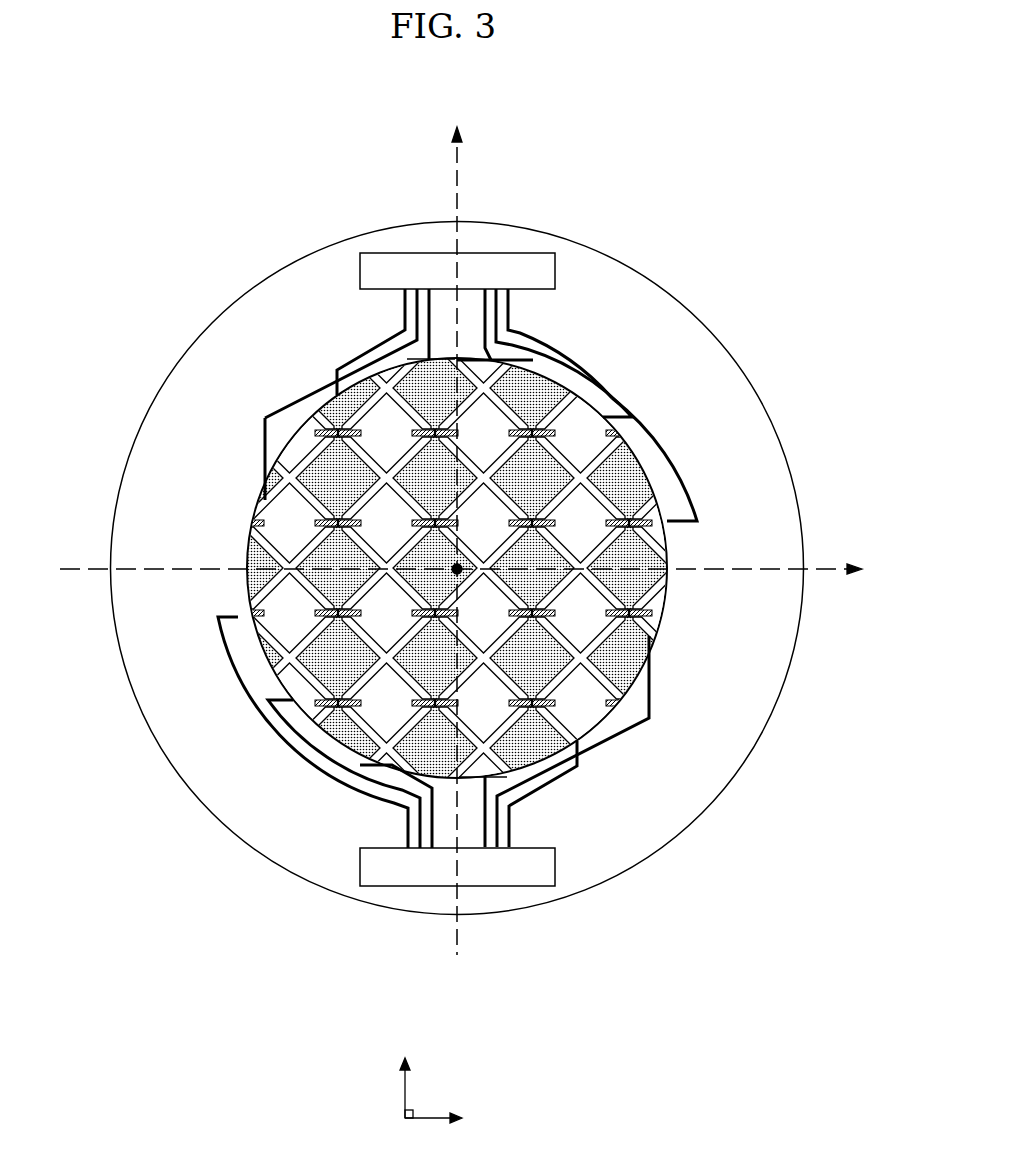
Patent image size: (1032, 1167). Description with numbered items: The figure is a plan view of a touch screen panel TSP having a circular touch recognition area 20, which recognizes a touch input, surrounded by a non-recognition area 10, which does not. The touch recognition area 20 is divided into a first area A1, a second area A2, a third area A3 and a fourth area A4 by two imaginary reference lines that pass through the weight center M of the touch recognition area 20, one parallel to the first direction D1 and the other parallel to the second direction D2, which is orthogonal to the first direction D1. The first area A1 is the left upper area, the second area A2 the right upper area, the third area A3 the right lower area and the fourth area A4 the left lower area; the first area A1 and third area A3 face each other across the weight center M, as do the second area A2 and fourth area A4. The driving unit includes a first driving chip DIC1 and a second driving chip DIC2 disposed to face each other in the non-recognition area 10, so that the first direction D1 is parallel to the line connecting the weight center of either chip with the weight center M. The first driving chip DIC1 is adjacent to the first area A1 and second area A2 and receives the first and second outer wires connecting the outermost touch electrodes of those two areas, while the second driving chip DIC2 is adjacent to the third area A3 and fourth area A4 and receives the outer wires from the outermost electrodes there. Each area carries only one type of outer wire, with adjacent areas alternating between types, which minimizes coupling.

The non-recognition area 10 is at (762, 738).
The touch recognition area 20 is at (596, 262).
The touch screen panel TSP is at (469, 533).
The first driving chip DIC1 is at (525, 254).
The second driving chip DIC2 is at (410, 887).
The first area A1 is at (372, 488).
The second area A2 is at (547, 488).
The third area A3 is at (547, 667).
The fourth area A4 is at (372, 667).
The weight center M is at (450, 561).
The first direction D1 is at (428, 611).
The second direction D2 is at (650, 846).